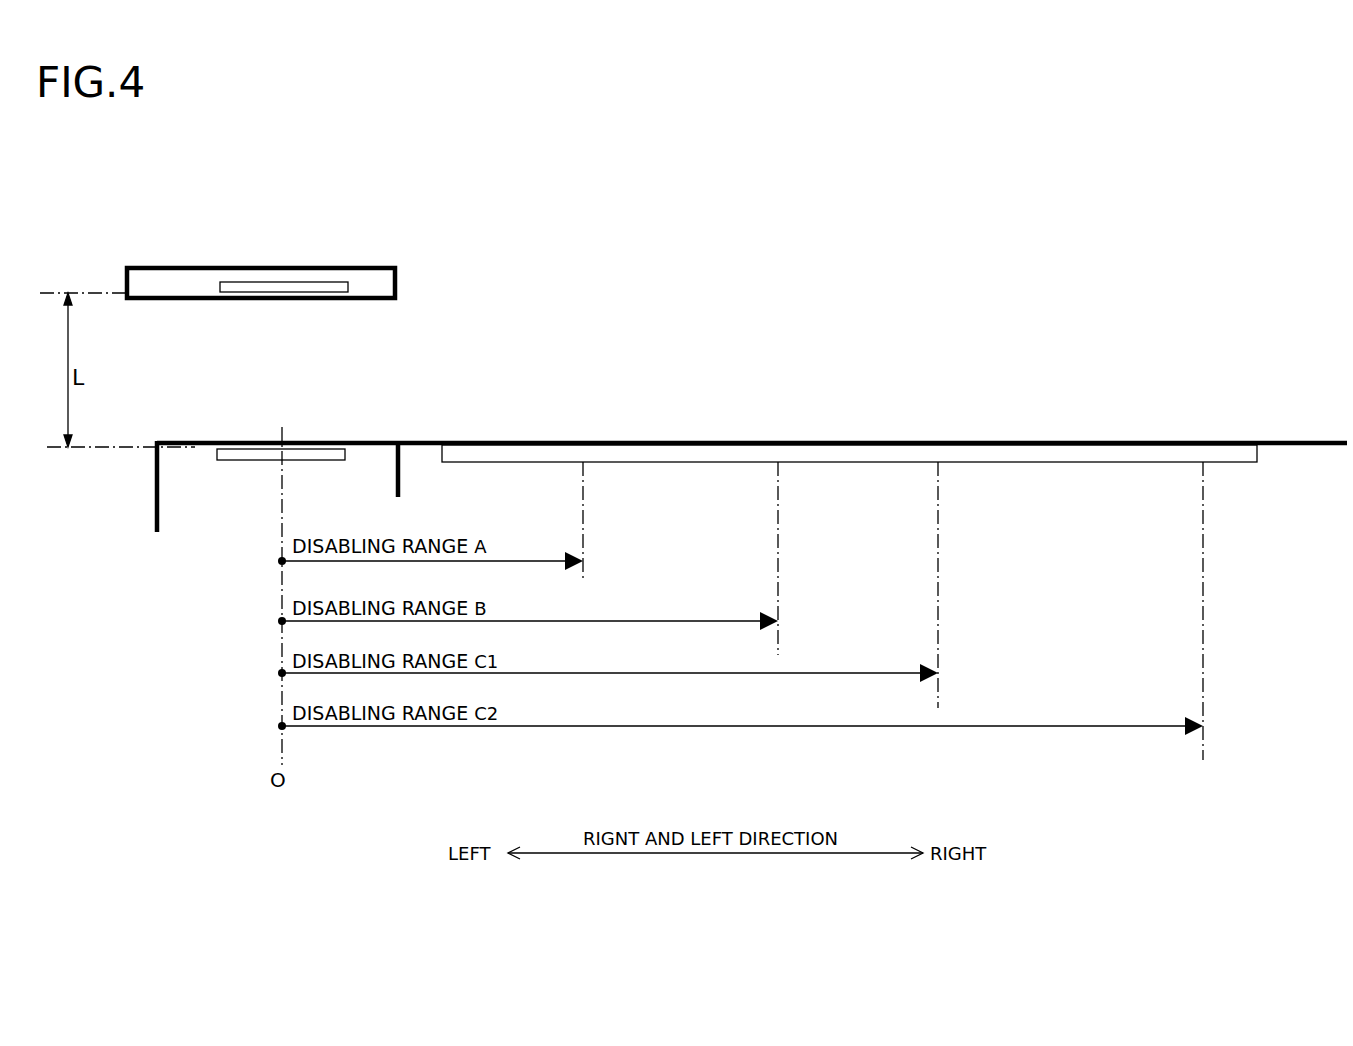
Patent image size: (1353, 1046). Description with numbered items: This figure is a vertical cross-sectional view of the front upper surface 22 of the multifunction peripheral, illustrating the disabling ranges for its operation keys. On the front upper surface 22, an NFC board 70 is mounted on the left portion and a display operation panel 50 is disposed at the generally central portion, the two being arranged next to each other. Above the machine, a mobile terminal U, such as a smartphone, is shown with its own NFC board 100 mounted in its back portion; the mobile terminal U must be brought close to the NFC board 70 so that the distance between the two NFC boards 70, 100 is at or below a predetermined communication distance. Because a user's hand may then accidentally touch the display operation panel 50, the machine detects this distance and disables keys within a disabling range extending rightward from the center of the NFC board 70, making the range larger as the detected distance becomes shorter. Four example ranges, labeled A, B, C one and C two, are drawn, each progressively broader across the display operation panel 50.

The NFC board 100 is at (378, 238).
The mobile terminal U is at (266, 206).
The front upper surface 22 is at (1122, 430).
The display operation panel 50 is at (910, 453).
The NFC board 70 is at (237, 459).